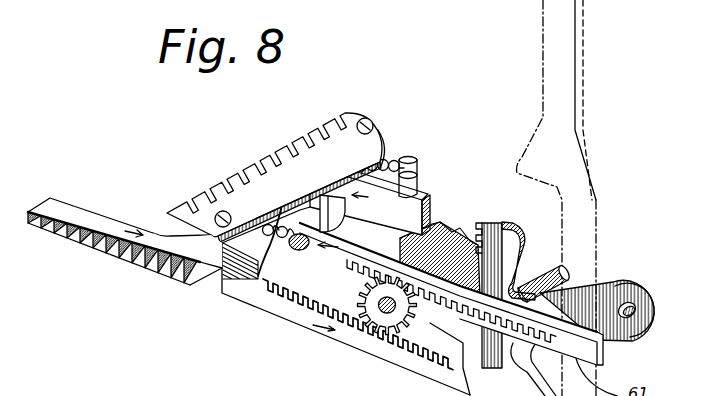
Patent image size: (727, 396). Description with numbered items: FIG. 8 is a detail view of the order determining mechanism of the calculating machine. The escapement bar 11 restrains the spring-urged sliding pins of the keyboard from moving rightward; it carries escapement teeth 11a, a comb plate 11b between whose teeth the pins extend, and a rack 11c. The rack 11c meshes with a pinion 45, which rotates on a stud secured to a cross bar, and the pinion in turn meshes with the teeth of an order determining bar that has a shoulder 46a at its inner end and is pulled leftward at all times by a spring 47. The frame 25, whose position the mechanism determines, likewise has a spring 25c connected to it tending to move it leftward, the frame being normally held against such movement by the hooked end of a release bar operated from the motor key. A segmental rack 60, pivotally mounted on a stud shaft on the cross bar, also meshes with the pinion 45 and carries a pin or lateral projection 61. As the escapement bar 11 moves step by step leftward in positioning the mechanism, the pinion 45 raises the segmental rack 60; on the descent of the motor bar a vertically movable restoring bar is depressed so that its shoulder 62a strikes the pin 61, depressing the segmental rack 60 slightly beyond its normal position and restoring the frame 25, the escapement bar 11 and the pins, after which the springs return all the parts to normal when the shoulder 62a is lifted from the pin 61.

The escapement bar 11 is at (125, 242).
The escapement teeth 11a is at (122, 204).
The comb plate 11b is at (347, 118).
The rack 11c is at (357, 342).
The frame 25 is at (418, 197).
The spring 25c is at (390, 158).
The pinion 45 is at (455, 233).
The shoulder 46a is at (323, 234).
The spring 47 is at (278, 244).
The segmental rack 60 is at (505, 226).
The pin or lateral projection 61 is at (533, 268).
The shoulder 62a is at (550, 180).